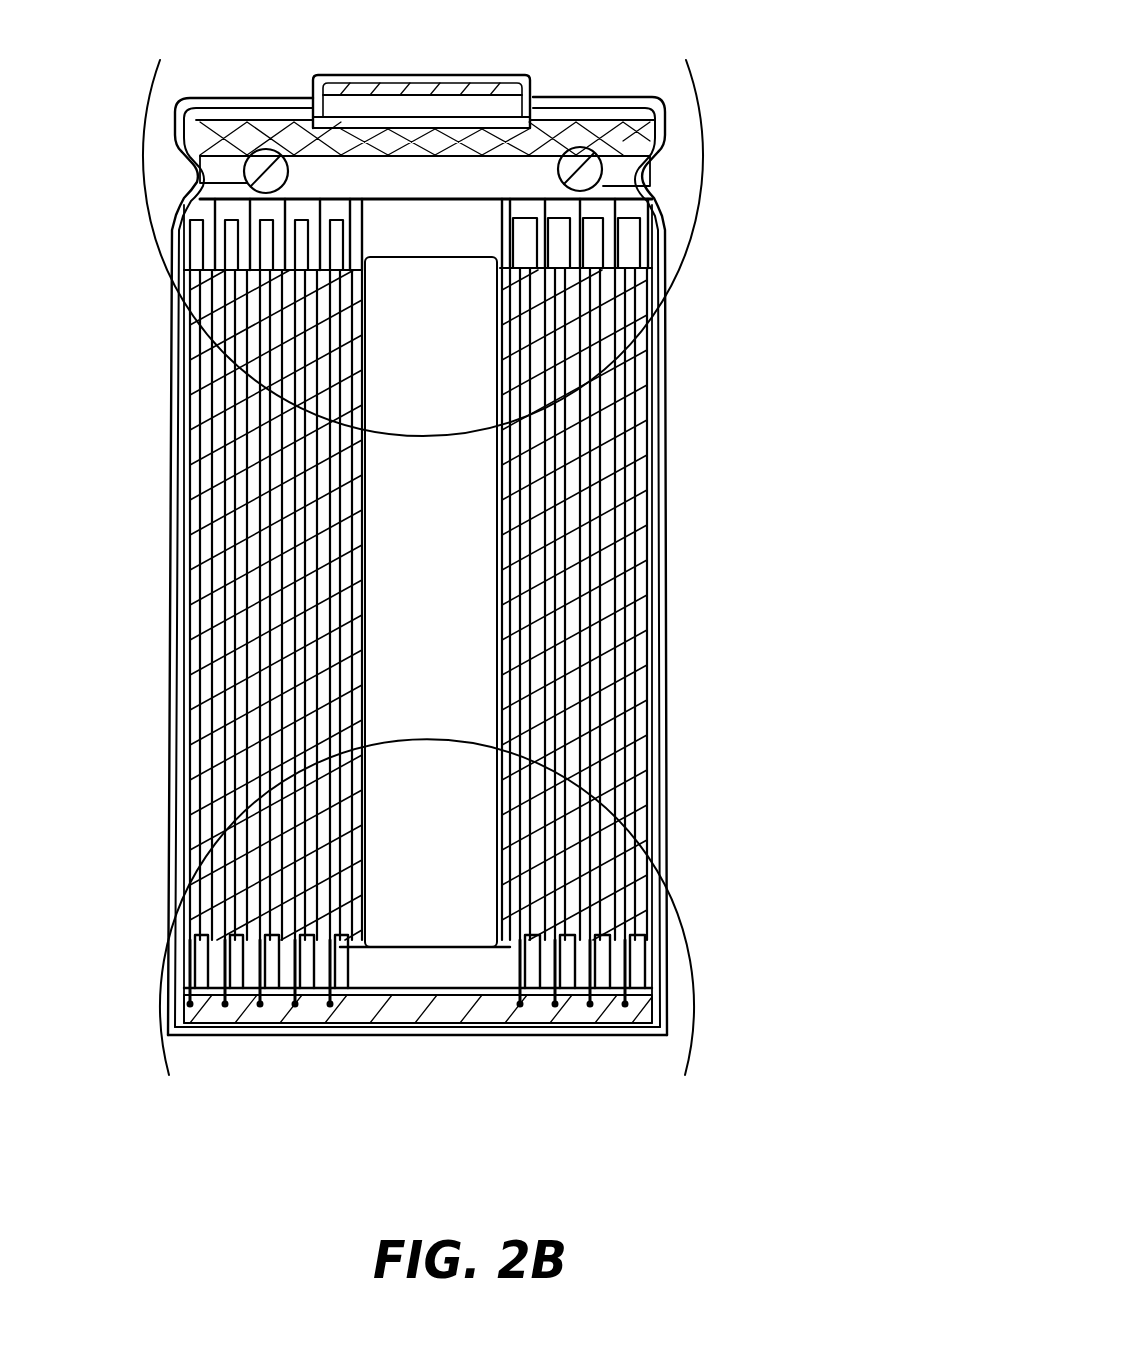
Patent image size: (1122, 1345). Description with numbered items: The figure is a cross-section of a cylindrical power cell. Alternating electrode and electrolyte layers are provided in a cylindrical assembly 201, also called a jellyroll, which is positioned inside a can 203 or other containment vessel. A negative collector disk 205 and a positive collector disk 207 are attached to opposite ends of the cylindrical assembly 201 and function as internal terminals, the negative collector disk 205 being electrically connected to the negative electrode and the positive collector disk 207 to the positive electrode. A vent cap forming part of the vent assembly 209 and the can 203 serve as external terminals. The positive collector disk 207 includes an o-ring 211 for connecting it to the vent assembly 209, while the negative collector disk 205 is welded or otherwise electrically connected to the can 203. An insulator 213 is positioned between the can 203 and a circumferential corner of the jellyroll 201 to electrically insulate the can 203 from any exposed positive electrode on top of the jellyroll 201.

The cylindrical assembly 201 is at (670, 312).
The can 203 is at (670, 658).
The negative collector disk 205 is at (643, 1013).
The positive collector disk 207 is at (603, 186).
The vent assembly 209 is at (583, 97).
The o-ring 211 is at (602, 158).
The insulator 213 is at (185, 187).